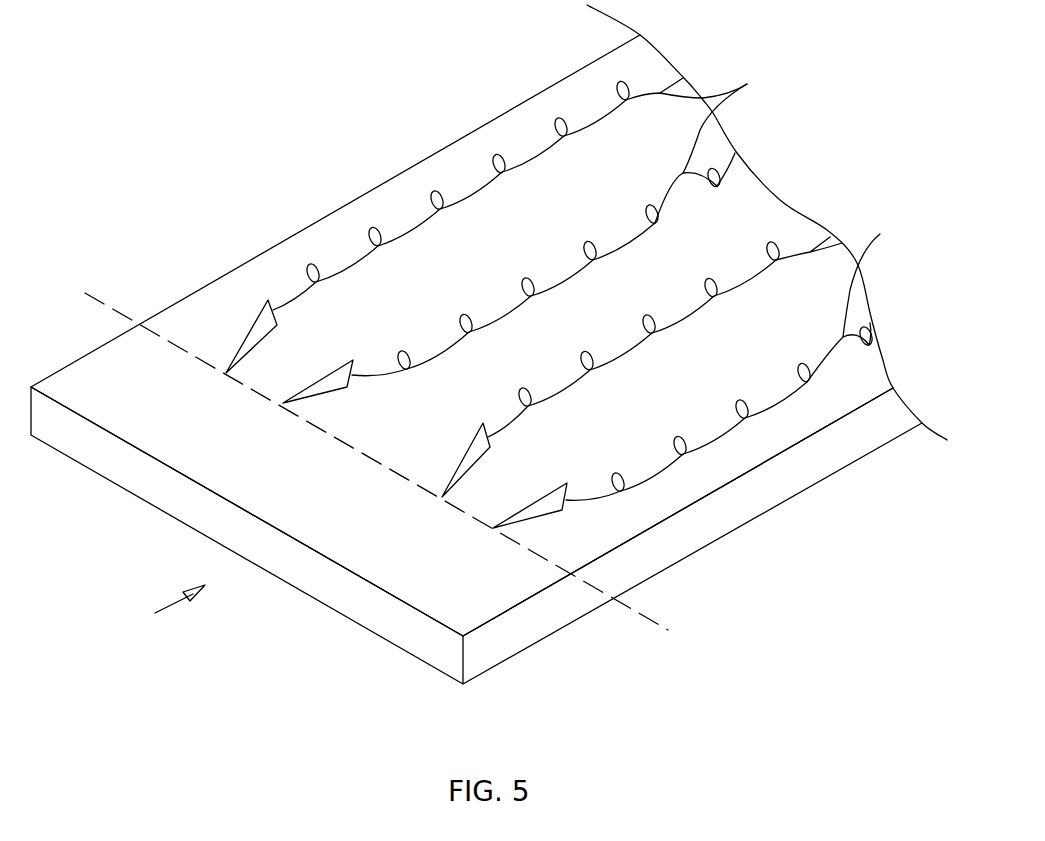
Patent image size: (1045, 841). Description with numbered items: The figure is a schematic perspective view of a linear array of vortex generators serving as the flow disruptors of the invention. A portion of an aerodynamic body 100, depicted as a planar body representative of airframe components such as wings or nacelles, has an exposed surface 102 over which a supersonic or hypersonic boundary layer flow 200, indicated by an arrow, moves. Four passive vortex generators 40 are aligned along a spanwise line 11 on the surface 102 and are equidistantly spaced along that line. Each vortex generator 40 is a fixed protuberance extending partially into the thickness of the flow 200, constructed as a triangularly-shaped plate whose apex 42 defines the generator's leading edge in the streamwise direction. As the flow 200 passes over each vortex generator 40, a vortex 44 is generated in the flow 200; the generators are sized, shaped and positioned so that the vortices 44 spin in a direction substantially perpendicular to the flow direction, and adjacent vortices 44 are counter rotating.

The spanwise line 11 is at (647, 612).
The vortex generator 40 is at (250, 327).
The apex 42 is at (226, 373).
The vortex 44 is at (703, 98).
The aerodynamic body 100 is at (523, 639).
The exposed surface 102 is at (735, 457).
The supersonic/hypersonic boundary layer flow 200 is at (170, 604).